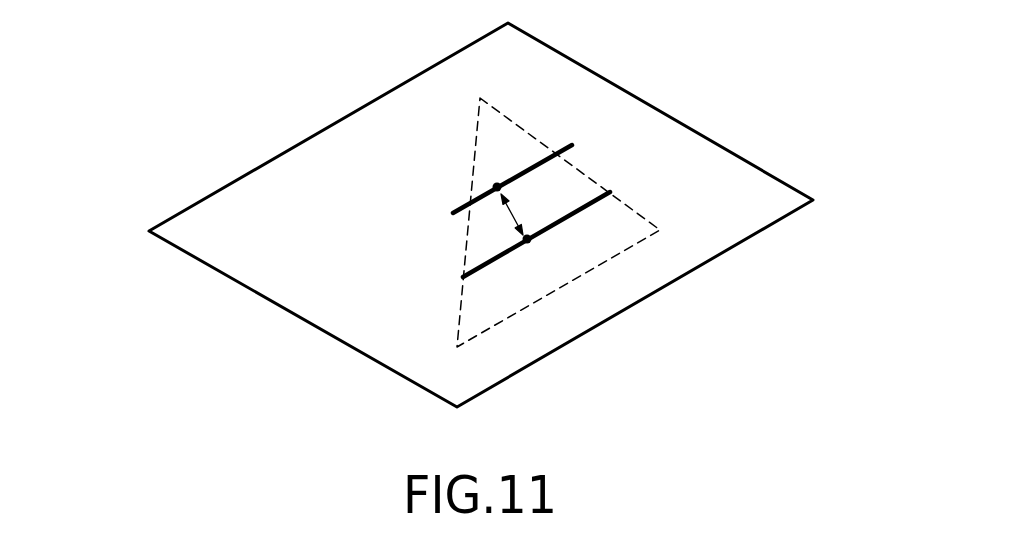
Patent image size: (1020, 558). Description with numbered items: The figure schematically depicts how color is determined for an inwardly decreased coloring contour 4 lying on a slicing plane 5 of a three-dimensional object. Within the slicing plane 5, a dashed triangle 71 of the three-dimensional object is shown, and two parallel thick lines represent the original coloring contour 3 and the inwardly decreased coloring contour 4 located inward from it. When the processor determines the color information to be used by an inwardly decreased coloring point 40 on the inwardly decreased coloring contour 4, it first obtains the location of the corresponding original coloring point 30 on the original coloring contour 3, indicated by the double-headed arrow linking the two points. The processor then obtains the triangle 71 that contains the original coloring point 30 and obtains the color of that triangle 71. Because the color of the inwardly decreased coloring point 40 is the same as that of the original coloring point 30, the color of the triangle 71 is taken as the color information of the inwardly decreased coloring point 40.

The slicing plane 5 is at (674, 130).
The triangle 71 is at (513, 130).
The inwardly decreased coloring contour 4 is at (471, 193).
The inwardly decreased coloring point 40 is at (497, 187).
The original coloring contour 3 is at (507, 261).
The original coloring point 30 is at (527, 239).